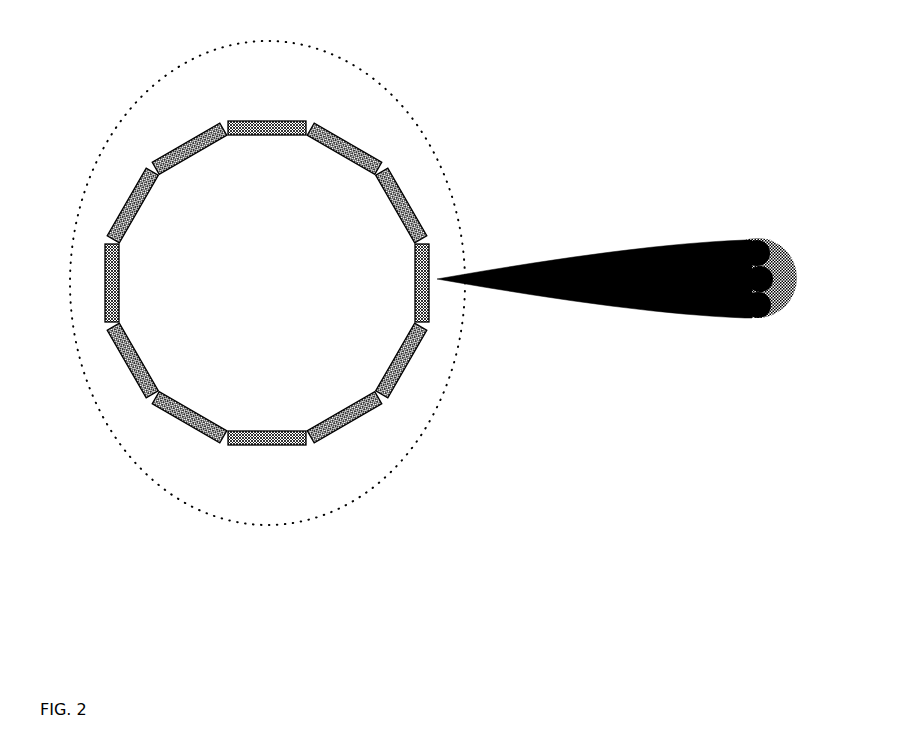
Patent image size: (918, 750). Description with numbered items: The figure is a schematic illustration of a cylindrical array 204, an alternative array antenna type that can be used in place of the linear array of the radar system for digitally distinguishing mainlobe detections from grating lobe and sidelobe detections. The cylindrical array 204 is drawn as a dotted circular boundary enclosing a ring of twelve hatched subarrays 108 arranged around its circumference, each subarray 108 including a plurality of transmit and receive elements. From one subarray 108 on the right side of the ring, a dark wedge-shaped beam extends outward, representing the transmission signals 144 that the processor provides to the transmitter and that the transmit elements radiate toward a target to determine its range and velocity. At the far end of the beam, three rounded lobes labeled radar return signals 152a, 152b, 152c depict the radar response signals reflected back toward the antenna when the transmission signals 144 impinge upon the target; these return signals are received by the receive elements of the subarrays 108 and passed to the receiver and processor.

The subarray 108 is at (346, 138).
The cylindrical array 204 is at (393, 97).
The transmission signal 144 is at (797, 285).
The radar return signal 152a is at (748, 238).
The radar return signal 152b is at (778, 305).
The radar return signal 152c is at (747, 320).